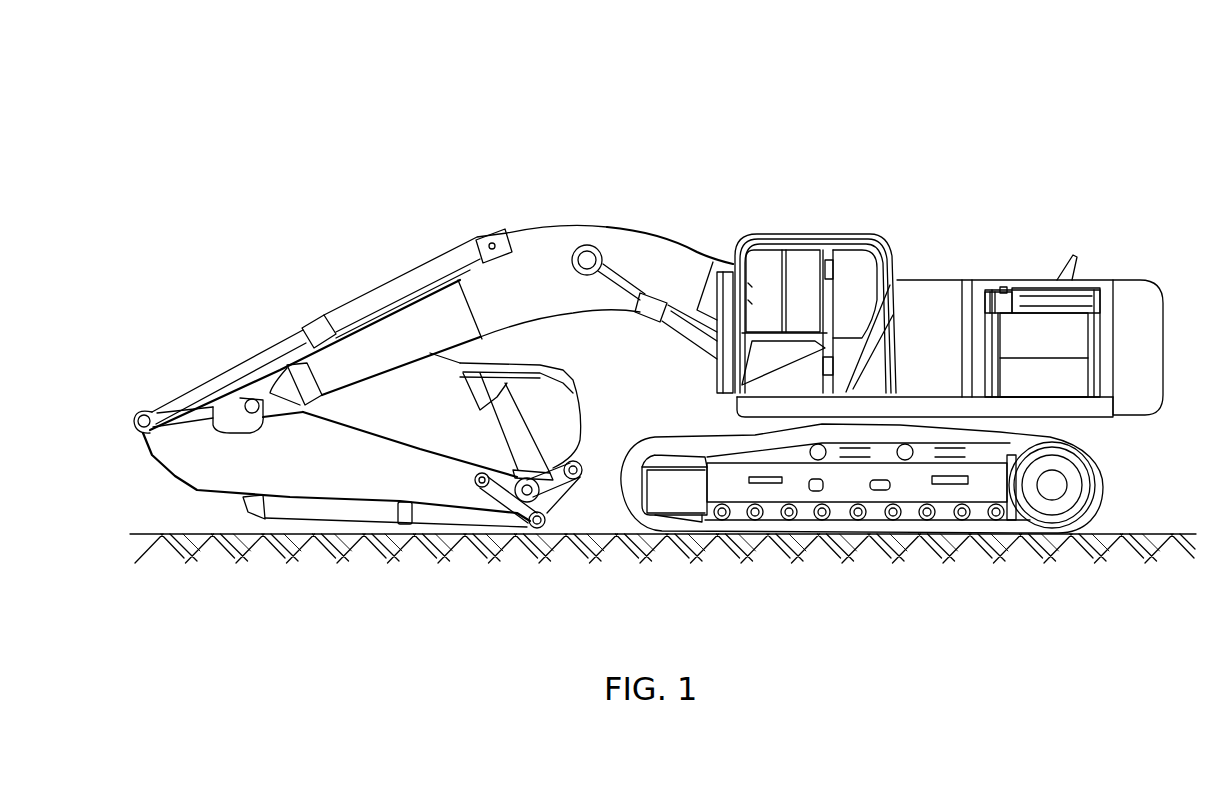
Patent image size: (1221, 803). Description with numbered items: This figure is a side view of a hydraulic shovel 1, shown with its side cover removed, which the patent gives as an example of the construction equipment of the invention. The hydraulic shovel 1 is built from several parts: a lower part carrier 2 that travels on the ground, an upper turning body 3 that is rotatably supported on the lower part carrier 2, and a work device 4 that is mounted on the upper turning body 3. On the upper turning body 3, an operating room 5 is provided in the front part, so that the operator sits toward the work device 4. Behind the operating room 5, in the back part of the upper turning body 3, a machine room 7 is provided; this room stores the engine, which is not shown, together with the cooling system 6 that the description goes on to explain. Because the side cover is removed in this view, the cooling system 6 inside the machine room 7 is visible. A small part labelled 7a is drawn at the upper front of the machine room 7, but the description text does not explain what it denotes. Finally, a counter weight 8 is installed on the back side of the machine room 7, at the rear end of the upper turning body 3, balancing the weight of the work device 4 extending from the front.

The hydraulic shovel 1 is at (975, 111).
The lower part carrier 2 is at (851, 487).
The upper turning body 3 is at (1132, 274).
The work device 4 is at (397, 250).
The operating room 5 is at (801, 283).
The cooling system 6 is at (1068, 333).
The machine room 7 is at (985, 290).
The controller connector 7a is at (1005, 289).
The counter weight 8 is at (1147, 337).